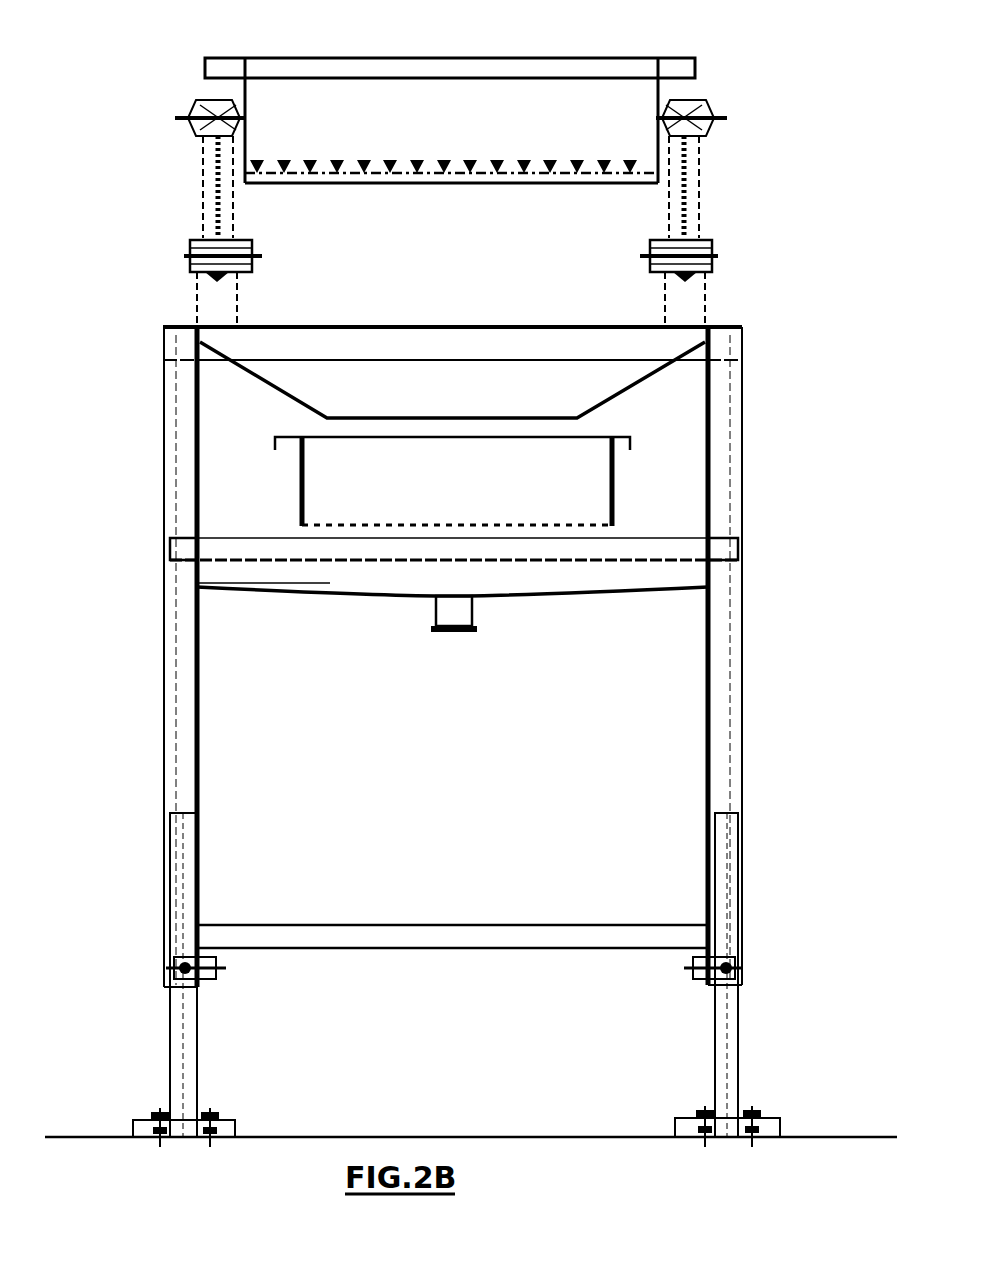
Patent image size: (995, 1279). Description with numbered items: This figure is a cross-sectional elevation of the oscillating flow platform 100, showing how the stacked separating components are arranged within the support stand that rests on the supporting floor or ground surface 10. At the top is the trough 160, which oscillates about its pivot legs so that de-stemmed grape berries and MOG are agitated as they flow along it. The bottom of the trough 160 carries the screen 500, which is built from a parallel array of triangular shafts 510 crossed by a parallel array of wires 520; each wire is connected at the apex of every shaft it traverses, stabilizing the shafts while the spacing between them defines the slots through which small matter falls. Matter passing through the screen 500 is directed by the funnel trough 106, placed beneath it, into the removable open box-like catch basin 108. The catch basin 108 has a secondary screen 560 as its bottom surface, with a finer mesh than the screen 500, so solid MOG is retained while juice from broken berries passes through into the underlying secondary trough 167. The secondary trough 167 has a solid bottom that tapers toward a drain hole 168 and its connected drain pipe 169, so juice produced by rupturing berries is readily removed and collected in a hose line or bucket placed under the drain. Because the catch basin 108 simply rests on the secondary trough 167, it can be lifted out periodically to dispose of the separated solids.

The oscillating flow platform 100 is at (118, 135).
The supporting floor or ground surface 10 is at (470, 1135).
The trough 160 is at (484, 134).
The parallel array of triangular shafts 510 is at (525, 160).
The parallel array of wires 520 is at (542, 178).
The screen 500 is at (455, 176).
The funnel trough 106 is at (484, 403).
The catch basin 108 is at (491, 503).
The secondary screen 560 is at (560, 527).
The secondary trough 167 is at (265, 577).
The drain hole 168 is at (445, 583).
The drain pipe 169 is at (428, 639).